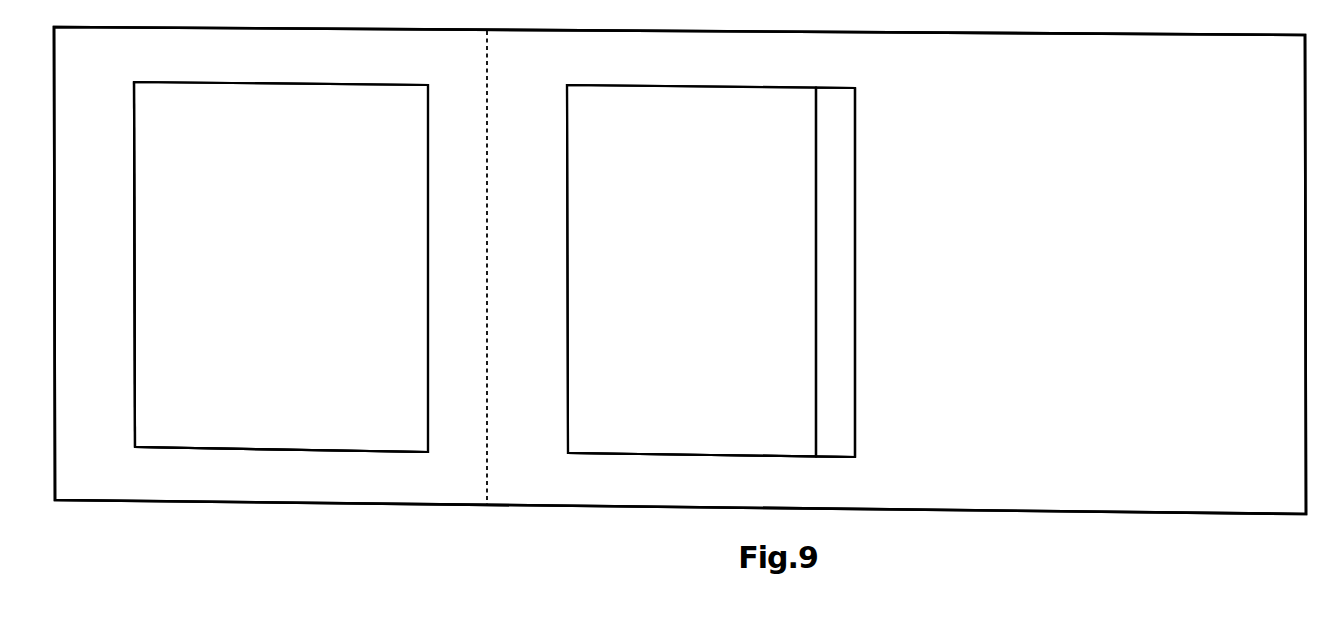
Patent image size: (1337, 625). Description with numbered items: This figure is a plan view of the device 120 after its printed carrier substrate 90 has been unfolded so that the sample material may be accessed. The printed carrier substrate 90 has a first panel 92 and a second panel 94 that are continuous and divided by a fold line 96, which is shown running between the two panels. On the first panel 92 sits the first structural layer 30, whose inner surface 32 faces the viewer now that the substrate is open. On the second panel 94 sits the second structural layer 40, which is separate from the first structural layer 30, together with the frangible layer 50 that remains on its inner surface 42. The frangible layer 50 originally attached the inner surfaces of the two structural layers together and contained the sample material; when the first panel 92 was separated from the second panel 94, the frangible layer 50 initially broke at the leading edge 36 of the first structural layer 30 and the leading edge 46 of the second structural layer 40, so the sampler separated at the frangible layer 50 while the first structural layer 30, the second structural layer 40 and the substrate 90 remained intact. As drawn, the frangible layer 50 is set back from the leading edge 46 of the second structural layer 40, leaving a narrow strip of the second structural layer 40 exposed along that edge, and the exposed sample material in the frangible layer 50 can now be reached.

The device 120 is at (192, 537).
The printed carrier substrate 90 is at (290, 512).
The first panel 92 is at (320, 461).
The second panel 94 is at (591, 487).
The fold line 96 is at (487, 505).
The first structural layer 30 is at (267, 73).
The inner surface 32 is at (373, 127).
The leading edge 36 is at (134, 100).
The second structural layer 40 is at (848, 75).
The inner surface 42 is at (840, 138).
The leading edge 46 is at (856, 187).
The frangible layer 50 is at (687, 125).